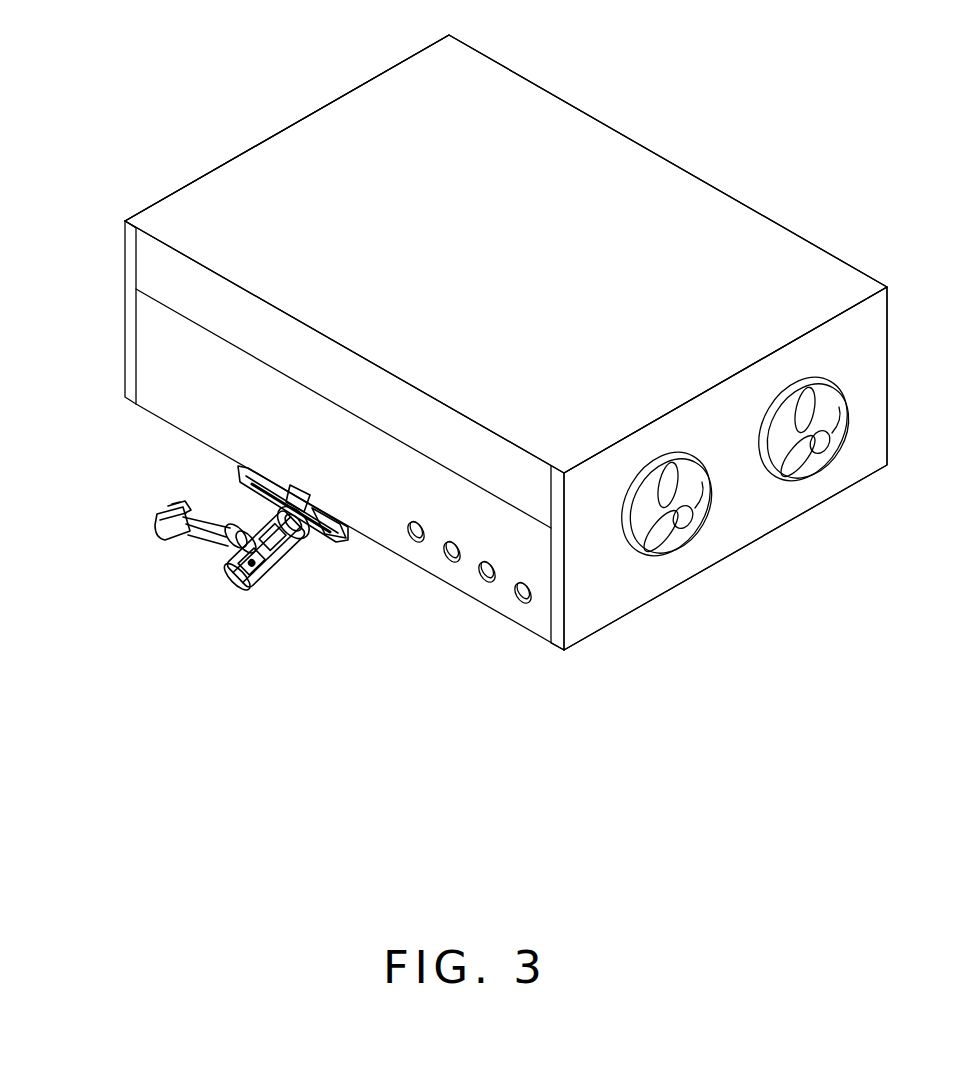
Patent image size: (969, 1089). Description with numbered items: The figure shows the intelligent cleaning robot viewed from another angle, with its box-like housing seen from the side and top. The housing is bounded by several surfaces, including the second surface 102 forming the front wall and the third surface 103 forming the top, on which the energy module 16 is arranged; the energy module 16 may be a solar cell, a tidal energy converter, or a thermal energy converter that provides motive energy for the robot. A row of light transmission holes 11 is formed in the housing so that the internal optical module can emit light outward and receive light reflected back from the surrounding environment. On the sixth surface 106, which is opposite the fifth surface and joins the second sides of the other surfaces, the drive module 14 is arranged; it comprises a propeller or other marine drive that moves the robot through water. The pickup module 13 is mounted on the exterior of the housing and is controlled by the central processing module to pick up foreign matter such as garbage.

The second surface 102 is at (157, 367).
The third surface 103 is at (418, 98).
The energy module 16 is at (187, 220).
The sixth surface 106 is at (597, 598).
The light transmission holes 11 is at (517, 600).
The drive module 14 is at (693, 492).
The pickup module 13 is at (168, 525).